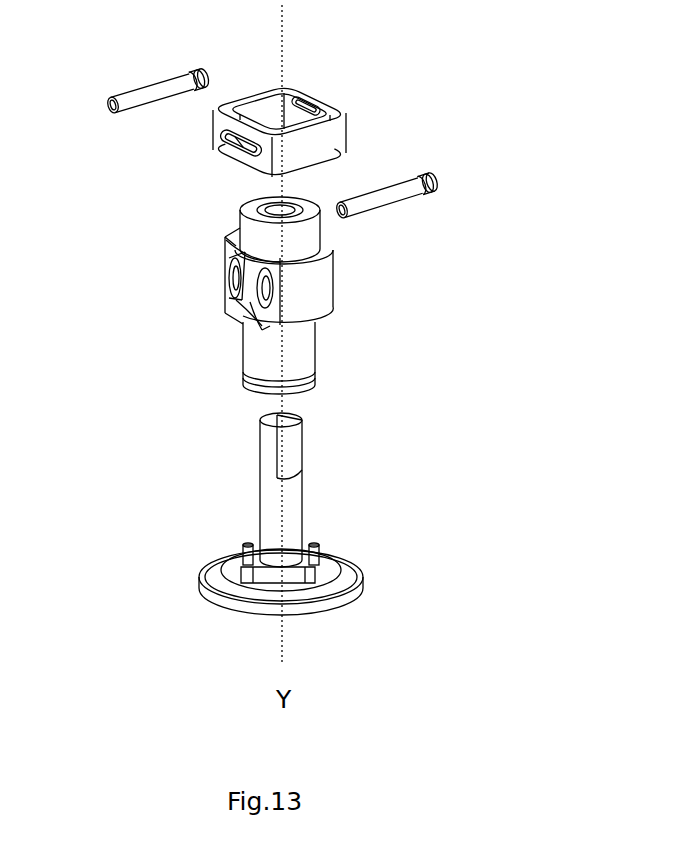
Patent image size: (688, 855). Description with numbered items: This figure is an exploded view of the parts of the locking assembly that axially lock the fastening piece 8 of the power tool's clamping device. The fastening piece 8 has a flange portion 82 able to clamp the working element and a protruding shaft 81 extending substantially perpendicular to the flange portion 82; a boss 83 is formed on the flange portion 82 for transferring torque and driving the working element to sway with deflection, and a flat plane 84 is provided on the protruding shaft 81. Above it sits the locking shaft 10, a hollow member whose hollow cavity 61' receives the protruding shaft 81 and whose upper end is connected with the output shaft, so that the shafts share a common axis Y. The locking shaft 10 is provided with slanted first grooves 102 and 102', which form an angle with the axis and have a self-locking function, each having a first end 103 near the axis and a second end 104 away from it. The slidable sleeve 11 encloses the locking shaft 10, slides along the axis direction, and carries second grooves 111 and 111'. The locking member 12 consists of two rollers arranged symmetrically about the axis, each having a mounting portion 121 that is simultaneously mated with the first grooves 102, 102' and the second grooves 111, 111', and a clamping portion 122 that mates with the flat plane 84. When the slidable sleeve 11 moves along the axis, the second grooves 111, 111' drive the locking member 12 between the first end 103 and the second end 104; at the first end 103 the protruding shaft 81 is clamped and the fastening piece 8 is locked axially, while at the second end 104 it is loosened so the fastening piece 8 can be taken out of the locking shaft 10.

The fastening piece 8 is at (280, 535).
The protruding shaft 81 is at (273, 490).
The flange portion 82 is at (340, 595).
The boss 83 is at (310, 545).
The flat plane 84 is at (292, 456).
The locking shaft 10 is at (256, 288).
The first groove 102 is at (207, 309).
The first groove 102' is at (333, 296).
The first end 103 is at (257, 312).
The second end 104 is at (233, 253).
The hollow cavity 61' is at (219, 200).
The slidable sleeve 11 is at (267, 93).
The second groove 111 is at (185, 147).
The second groove 111' is at (329, 63).
The locking member 12 is at (265, 142).
The mounting portion 121 is at (207, 78).
The clamping portion 122 is at (162, 90).